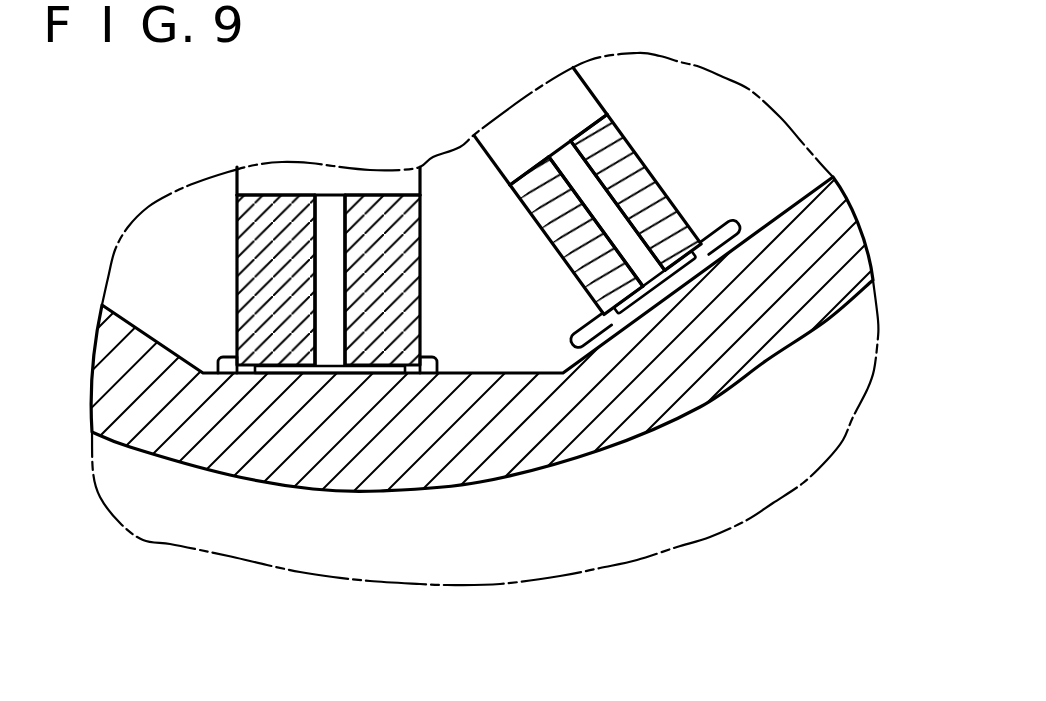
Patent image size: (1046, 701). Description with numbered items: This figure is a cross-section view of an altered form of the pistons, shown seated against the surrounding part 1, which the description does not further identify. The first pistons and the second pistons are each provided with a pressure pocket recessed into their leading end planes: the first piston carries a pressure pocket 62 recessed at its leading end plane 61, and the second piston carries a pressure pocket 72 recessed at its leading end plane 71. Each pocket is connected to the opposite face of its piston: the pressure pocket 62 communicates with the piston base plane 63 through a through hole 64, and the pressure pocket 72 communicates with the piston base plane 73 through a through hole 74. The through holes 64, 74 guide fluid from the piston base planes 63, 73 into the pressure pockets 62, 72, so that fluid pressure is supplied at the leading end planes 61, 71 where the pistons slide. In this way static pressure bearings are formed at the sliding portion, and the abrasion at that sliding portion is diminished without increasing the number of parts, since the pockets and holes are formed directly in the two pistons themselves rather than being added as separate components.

The housing 1 is at (848, 257).
The leading end plane 61 is at (238, 378).
The pressure pocket 62 is at (332, 378).
The piston base plane 63 is at (377, 193).
The through hole 64 is at (328, 270).
The leading end plane 71 is at (710, 250).
The pressure pocket 72 is at (667, 293).
The piston base plane 73 is at (617, 137).
The through hole 74 is at (622, 228).